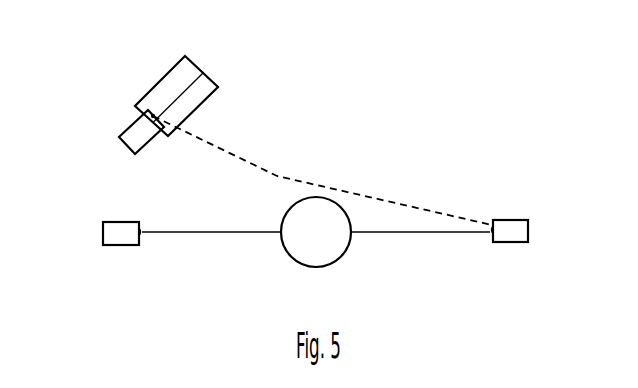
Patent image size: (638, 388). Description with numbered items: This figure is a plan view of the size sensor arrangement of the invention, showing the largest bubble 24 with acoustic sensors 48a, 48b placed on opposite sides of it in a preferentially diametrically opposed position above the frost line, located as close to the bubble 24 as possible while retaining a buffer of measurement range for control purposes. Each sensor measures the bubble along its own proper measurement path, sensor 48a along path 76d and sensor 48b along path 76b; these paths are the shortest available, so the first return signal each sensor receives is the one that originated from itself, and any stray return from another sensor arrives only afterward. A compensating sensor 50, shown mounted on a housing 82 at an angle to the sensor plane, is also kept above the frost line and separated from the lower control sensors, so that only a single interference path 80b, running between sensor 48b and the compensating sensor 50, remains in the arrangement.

The light source module 82 is at (173, 87).
The compensating sensor 50 is at (132, 123).
The path for interference 80b is at (322, 166).
The bubble 24 is at (363, 224).
The sensor 48a is at (88, 222).
The sensor 48b is at (545, 219).
The proper measurement path 76d is at (200, 257).
The proper measurement path 76b is at (440, 255).